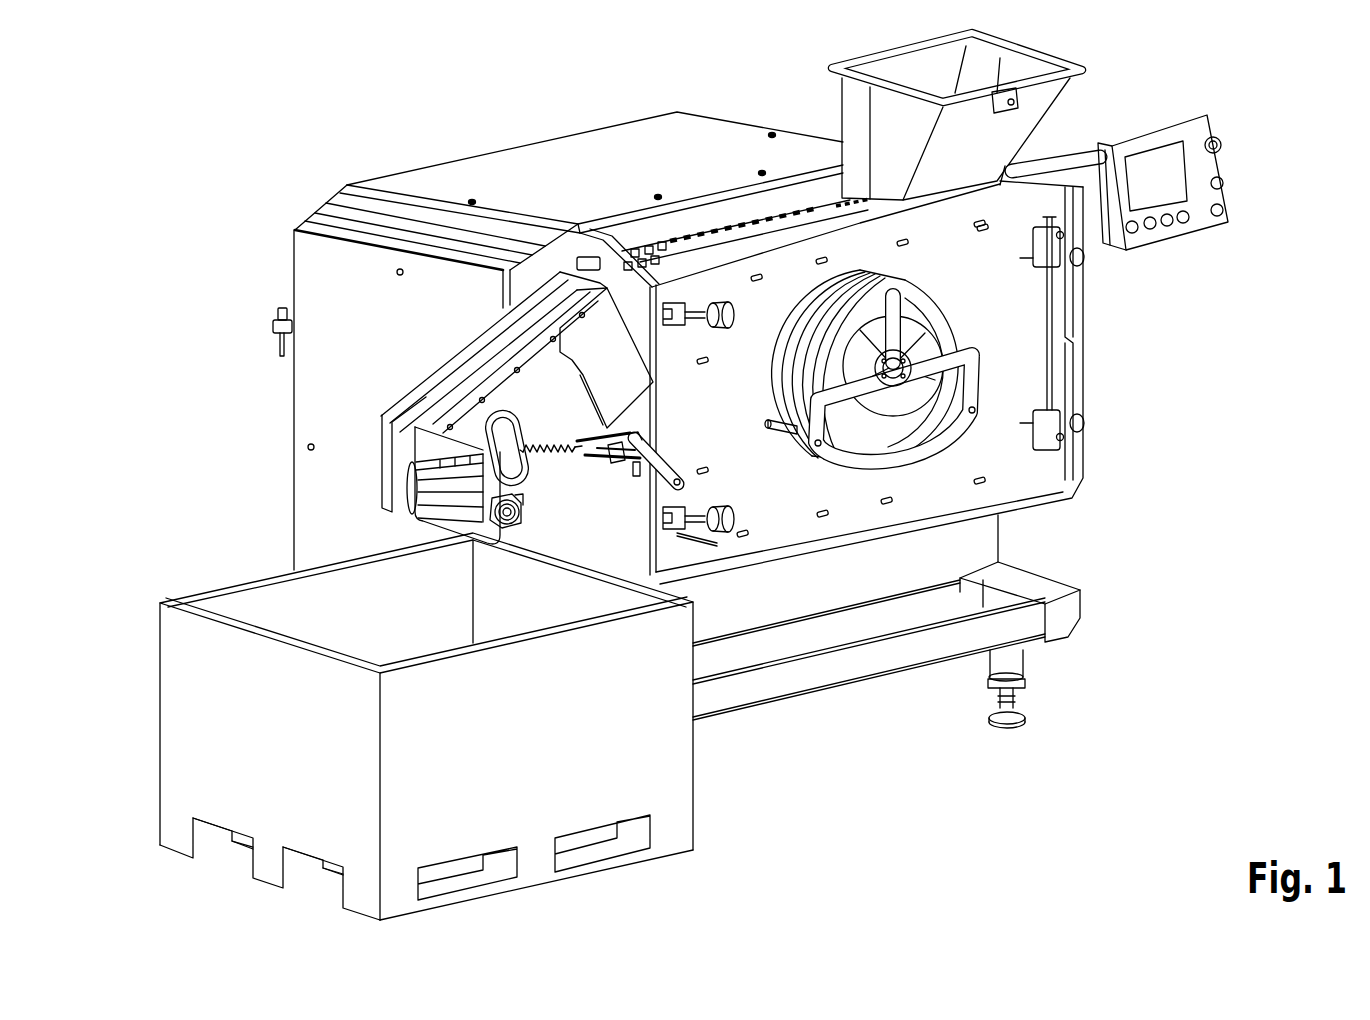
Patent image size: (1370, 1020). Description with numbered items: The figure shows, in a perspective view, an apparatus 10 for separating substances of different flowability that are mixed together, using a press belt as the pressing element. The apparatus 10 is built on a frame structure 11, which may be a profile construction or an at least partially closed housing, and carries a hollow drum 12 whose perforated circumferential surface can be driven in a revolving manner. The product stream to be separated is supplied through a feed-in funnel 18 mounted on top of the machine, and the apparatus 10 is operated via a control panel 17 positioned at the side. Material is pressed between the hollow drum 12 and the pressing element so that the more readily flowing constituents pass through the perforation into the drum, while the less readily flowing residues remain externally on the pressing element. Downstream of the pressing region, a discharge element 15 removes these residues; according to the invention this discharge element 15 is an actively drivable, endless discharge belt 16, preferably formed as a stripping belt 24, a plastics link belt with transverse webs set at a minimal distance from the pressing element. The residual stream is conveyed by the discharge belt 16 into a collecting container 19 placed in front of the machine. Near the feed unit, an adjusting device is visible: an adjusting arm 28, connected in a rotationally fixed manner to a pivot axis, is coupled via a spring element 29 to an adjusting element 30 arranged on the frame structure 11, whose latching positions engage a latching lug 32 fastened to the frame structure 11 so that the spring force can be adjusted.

The apparatus 10 is at (237, 117).
The frame structure 11 is at (350, 380).
The hollow drum 12 is at (852, 297).
The discharge element 15 is at (414, 468).
The discharge belt 16 is at (447, 487).
The stripping belt 24 is at (445, 488).
The control panel 17 is at (1173, 118).
The feed-in funnel 18 is at (1022, 60).
The collecting container 19 is at (670, 757).
The adjusting arm 28 is at (668, 463).
The spring element 29 is at (615, 453).
The adjusting element 30 is at (527, 420).
The latching lug 32 is at (548, 457).